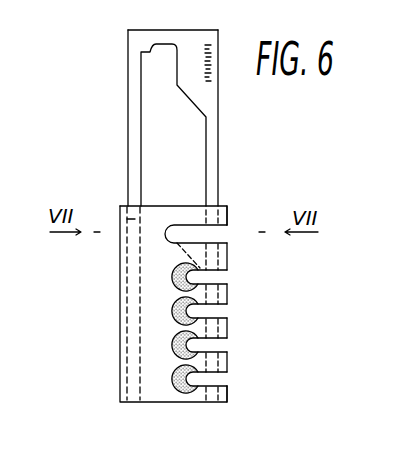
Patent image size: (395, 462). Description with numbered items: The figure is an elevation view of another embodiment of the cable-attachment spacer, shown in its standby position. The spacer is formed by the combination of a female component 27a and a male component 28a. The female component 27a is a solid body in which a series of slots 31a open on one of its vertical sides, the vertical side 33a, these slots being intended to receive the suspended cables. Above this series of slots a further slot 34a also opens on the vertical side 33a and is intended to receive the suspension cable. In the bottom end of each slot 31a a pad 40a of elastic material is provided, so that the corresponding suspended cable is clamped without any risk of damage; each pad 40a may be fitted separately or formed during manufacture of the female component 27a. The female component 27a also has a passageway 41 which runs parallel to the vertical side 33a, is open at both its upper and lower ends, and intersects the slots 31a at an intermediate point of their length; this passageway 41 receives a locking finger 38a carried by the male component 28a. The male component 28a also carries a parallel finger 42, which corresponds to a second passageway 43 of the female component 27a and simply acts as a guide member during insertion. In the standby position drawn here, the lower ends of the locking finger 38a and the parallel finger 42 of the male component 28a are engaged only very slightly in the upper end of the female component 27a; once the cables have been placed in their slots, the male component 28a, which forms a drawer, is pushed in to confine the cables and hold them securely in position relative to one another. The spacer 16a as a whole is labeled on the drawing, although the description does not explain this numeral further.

The guide body 16a is at (258, 110).
The inner recess profile 28a is at (132, 44).
The left wall 42 is at (128, 148).
The right wall 38a is at (218, 146).
The upper slot 27a is at (170, 223).
The upper bar 34a is at (228, 229).
The first tooth 33a is at (237, 260).
The keyhole slot 31a is at (199, 313).
The lower tooth 41 is at (216, 360).
The hidden wall extension 43 is at (127, 284).
The stippled bulb recesses 40a is at (173, 343).